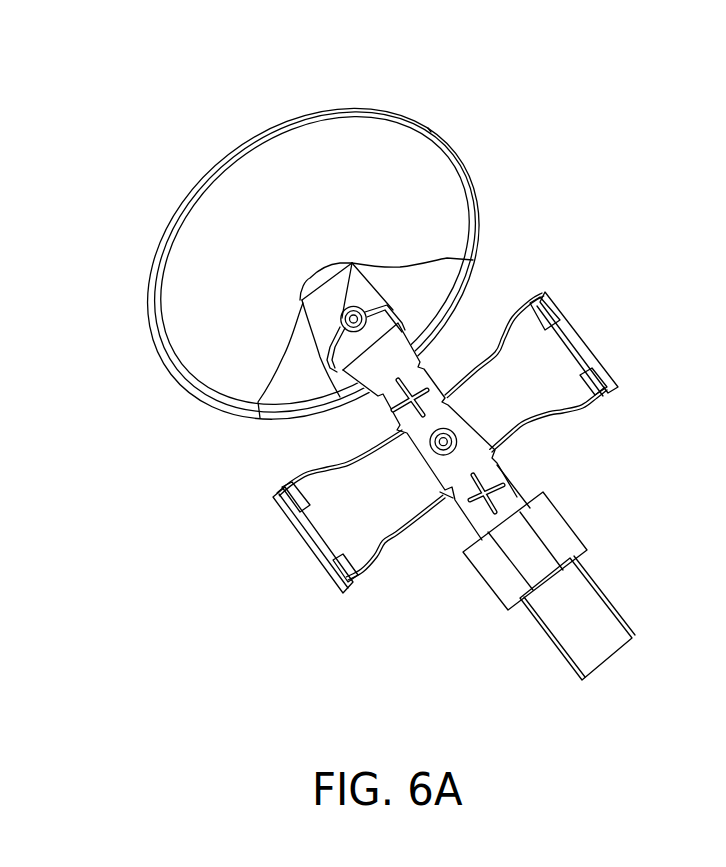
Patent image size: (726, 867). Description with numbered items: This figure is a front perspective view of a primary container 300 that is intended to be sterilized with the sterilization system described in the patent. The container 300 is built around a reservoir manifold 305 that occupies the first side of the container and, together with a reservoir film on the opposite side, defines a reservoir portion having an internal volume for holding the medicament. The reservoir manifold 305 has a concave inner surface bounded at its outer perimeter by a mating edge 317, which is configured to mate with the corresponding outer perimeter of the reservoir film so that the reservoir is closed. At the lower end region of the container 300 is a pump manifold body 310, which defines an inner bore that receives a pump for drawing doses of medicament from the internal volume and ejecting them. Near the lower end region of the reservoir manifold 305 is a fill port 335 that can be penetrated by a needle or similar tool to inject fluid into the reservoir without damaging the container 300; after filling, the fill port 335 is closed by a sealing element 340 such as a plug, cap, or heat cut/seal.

The primary container 300 is at (145, 128).
The reservoir manifold 305 is at (265, 160).
The pump manifold body 310 is at (377, 371).
The mating edge 317 is at (428, 128).
The fill port 335 is at (352, 263).
The sealing element 340 is at (343, 319).